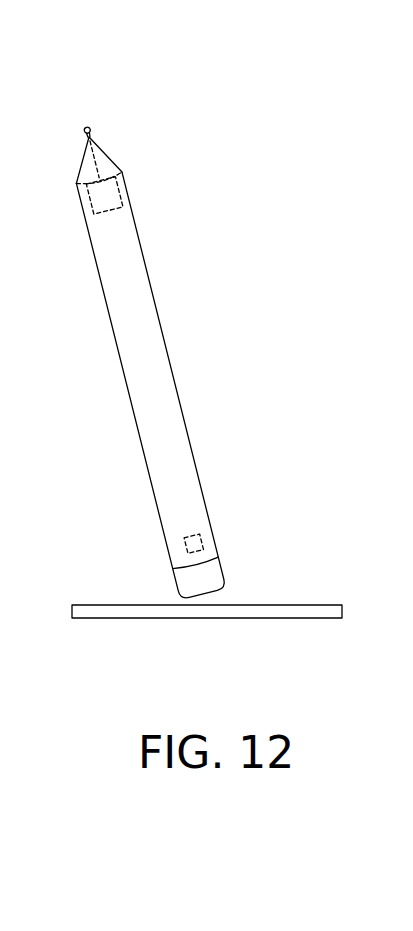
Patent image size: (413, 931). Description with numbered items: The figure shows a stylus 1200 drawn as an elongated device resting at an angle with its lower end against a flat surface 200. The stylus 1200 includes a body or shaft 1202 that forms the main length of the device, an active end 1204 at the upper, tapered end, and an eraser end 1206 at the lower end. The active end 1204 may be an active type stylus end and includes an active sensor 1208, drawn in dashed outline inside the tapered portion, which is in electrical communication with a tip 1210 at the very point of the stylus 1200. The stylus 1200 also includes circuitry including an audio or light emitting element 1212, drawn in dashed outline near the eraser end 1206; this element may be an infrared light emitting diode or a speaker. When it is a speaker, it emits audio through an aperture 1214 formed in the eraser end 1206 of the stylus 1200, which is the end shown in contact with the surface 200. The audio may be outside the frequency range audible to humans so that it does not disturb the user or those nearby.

The stylus 1200 is at (200, 252).
The tip 1210 is at (91, 130).
The active end 1204 is at (110, 168).
The active sensor 1208 is at (121, 197).
The body or shaft 1202 is at (165, 348).
The audio or light emitting element 1212 is at (196, 540).
The eraser end 1206 is at (221, 581).
The aperture 1214 is at (203, 595).
The touch surface 200 is at (313, 605).